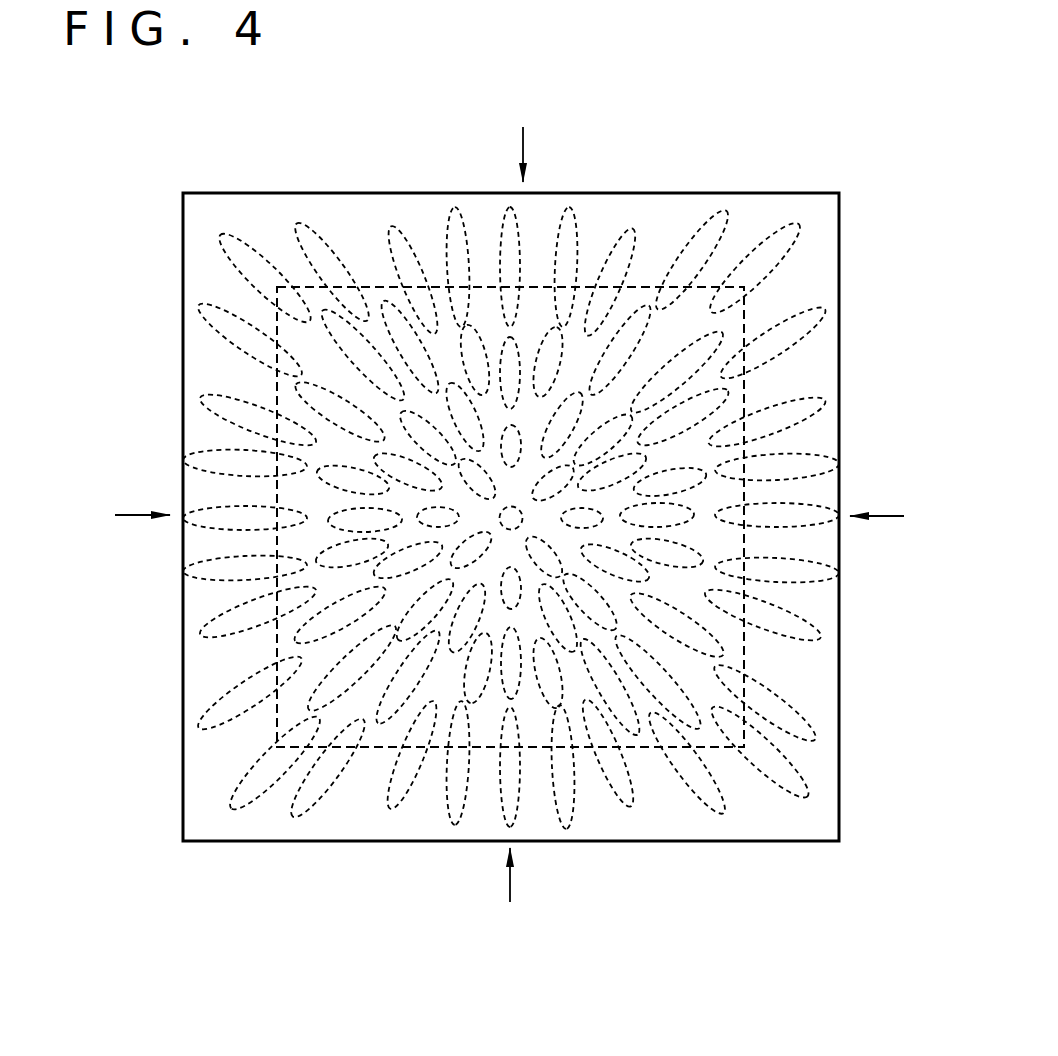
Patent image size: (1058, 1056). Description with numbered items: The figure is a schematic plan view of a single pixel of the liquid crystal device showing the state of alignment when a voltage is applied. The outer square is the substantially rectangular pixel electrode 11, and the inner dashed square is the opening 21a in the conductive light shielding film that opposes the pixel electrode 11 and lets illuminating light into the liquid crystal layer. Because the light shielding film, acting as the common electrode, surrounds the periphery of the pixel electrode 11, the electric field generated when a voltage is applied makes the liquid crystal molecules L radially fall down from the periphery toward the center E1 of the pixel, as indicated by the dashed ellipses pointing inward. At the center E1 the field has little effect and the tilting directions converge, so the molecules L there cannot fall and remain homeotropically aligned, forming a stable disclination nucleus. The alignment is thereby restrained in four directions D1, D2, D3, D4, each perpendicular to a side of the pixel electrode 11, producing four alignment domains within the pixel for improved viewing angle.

The pixel electrode 11 is at (838, 237).
The opening 21a is at (745, 377).
The liquid crystal molecule L is at (687, 242).
The center of pixel E1 is at (537, 531).
The alignment direction D1 is at (539, 153).
The alignment direction D2 is at (139, 497).
The alignment direction D3 is at (491, 880).
The alignment direction D4 is at (878, 535).